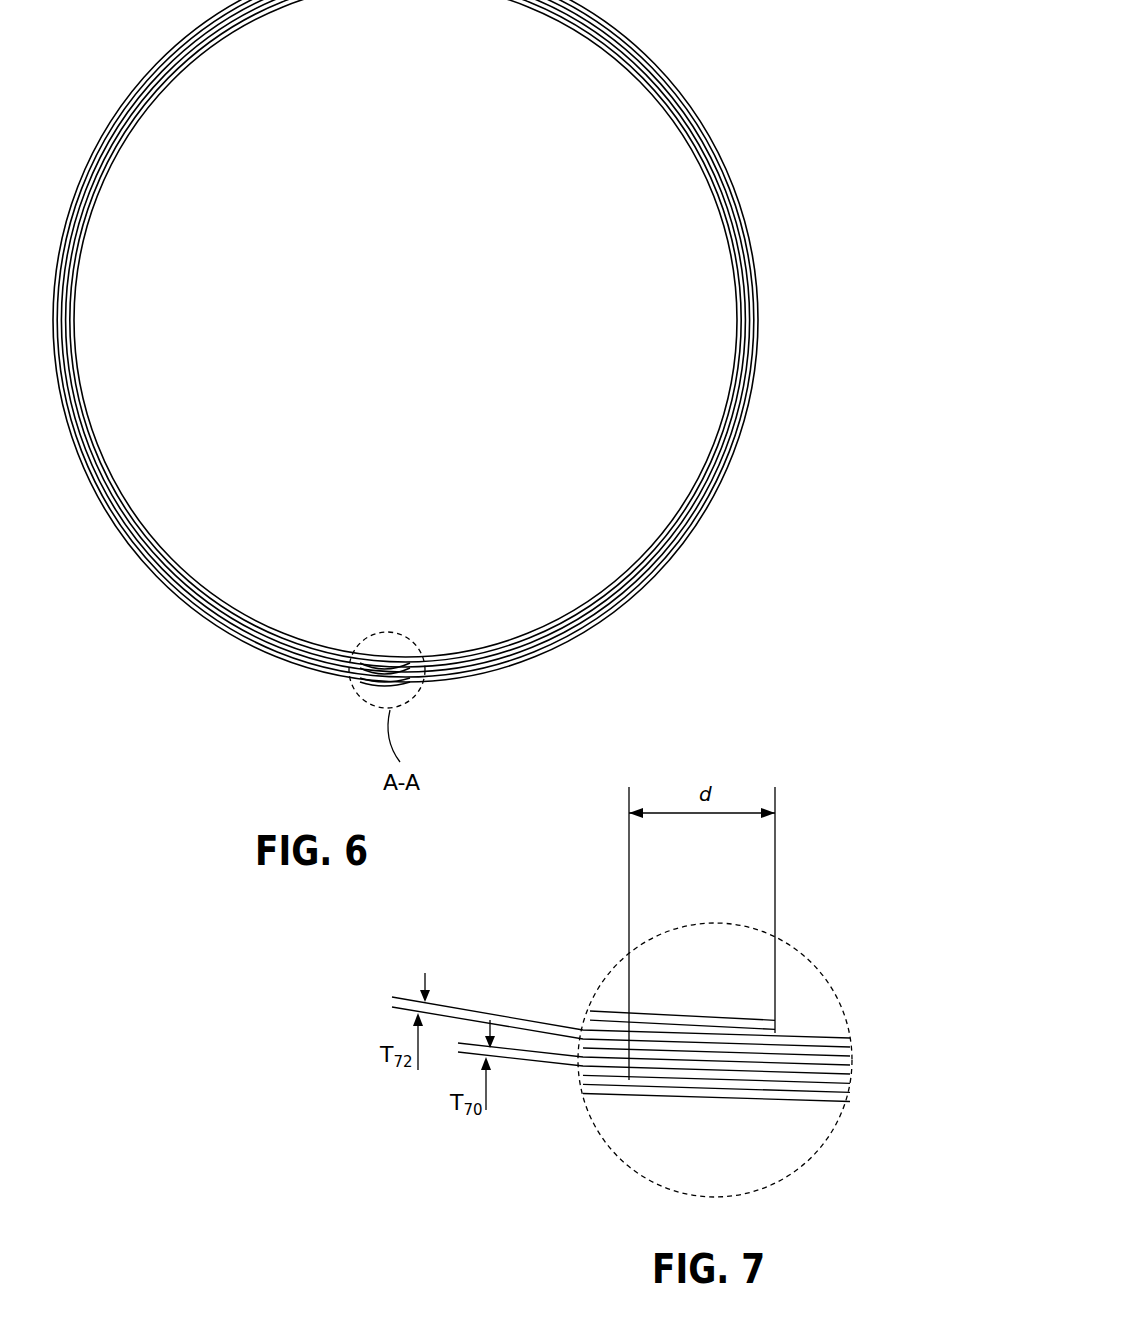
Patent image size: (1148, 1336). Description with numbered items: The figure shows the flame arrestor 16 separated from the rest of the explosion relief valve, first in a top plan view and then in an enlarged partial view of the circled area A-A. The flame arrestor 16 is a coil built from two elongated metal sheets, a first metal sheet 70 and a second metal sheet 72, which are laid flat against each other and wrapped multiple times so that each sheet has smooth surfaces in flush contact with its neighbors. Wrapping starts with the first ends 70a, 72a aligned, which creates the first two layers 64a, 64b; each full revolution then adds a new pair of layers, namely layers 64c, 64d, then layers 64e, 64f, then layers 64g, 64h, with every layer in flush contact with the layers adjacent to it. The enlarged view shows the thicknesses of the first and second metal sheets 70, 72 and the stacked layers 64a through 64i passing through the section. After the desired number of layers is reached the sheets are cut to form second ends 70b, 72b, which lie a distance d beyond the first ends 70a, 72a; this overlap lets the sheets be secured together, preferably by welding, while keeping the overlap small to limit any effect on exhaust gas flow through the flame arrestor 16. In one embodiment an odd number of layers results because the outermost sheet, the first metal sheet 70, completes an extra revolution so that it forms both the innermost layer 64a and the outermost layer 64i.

In FIG. 6, the flame arrestor 16 is at (802, 227).
In FIG. 7, the first metal sheet 70 is at (750, 1093).
In FIG. 7, the second metal sheet 72 is at (722, 1085).
In FIG. 6, the first end of first metal sheet 70a is at (402, 663).
In FIG. 7, the first end of first metal sheet 70a is at (777, 1020).
In FIG. 6, the first end of second metal sheet 72a is at (421, 625).
In FIG. 7, the first end of second metal sheet 72a is at (775, 1032).
In FIG. 6, the second end of first metal sheet 70b is at (360, 682).
In FIG. 7, the second end of first metal sheet 70b is at (630, 1088).
In FIG. 6, the second end of second metal sheet 72b is at (339, 720).
In FIG. 7, the second end of second metal sheet 72b is at (628, 1080).
In FIG. 7, the layer 64a is at (598, 1010).
In FIG. 7, the layer 64b is at (590, 1018).
In FIG. 7, the layer 64c is at (848, 1037).
In FIG. 7, the layer 64d is at (855, 1050).
In FIG. 7, the layer 64e is at (855, 1057).
In FIG. 7, the layer 64f is at (855, 1063).
In FIG. 7, the layer 64g is at (853, 1077).
In FIG. 7, the layer 64h is at (853, 1088).
In FIG. 7, the layer 64i is at (852, 1097).